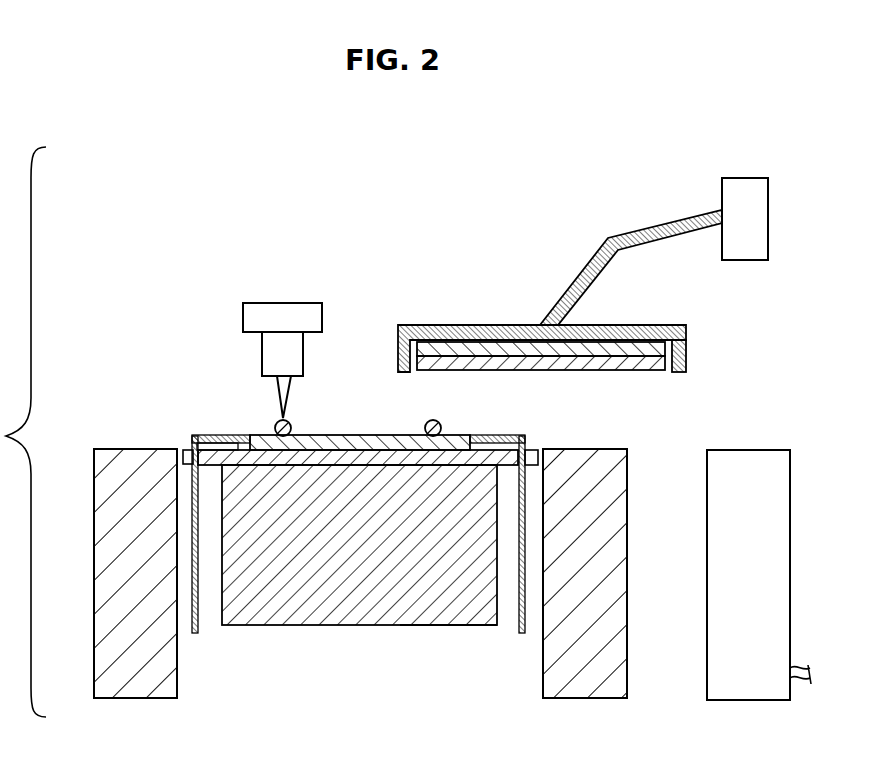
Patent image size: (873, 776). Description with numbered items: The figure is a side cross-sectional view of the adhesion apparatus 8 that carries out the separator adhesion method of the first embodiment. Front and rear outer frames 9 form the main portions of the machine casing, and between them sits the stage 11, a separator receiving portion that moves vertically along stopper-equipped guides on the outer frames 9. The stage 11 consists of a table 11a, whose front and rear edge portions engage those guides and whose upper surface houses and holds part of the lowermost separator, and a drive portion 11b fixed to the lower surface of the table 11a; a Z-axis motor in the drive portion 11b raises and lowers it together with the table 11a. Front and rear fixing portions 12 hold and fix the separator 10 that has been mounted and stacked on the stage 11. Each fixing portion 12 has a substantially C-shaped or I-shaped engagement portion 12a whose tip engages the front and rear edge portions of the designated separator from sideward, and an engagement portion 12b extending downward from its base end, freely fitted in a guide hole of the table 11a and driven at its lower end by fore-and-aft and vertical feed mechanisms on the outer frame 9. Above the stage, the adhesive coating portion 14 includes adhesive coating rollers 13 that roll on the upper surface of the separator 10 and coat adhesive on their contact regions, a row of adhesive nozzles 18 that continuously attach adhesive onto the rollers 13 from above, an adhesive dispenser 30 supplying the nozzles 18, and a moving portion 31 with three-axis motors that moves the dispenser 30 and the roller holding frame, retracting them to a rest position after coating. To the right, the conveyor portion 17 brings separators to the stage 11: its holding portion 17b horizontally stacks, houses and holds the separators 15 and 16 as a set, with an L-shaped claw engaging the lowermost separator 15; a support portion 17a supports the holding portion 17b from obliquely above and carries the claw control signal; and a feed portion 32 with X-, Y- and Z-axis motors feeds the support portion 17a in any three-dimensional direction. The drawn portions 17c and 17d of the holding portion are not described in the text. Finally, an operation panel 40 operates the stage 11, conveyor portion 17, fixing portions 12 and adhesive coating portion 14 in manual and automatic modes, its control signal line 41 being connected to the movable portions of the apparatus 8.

The adhesion apparatus 8 is at (333, 266).
The outer frame 9 is at (95, 490).
The separator 10 is at (365, 435).
The stage 11 is at (360, 608).
The table 11a is at (450, 435).
The drive portion 11b is at (430, 625).
The fixing portion 12 is at (192, 435).
The engagement portion 12a is at (208, 435).
The engagement portion 12b is at (198, 630).
The adhesive coating roller 13 is at (277, 424).
The adhesive coating portion 14 is at (246, 377).
The separator 15 is at (637, 364).
The separator 16 is at (633, 351).
The conveyor portion 17 is at (658, 222).
The support portion 17a is at (573, 275).
The holding portion 17b is at (467, 325).
The hood side wall 17c is at (685, 357).
The hood inner surface 17d is at (607, 340).
The adhesive nozzle 18 is at (292, 393).
The adhesive dispenser 30 is at (303, 355).
The moving portion 31 is at (322, 312).
The feed portion 32 is at (745, 178).
The operation panel 40 is at (790, 492).
The control signal line 41 is at (797, 665).